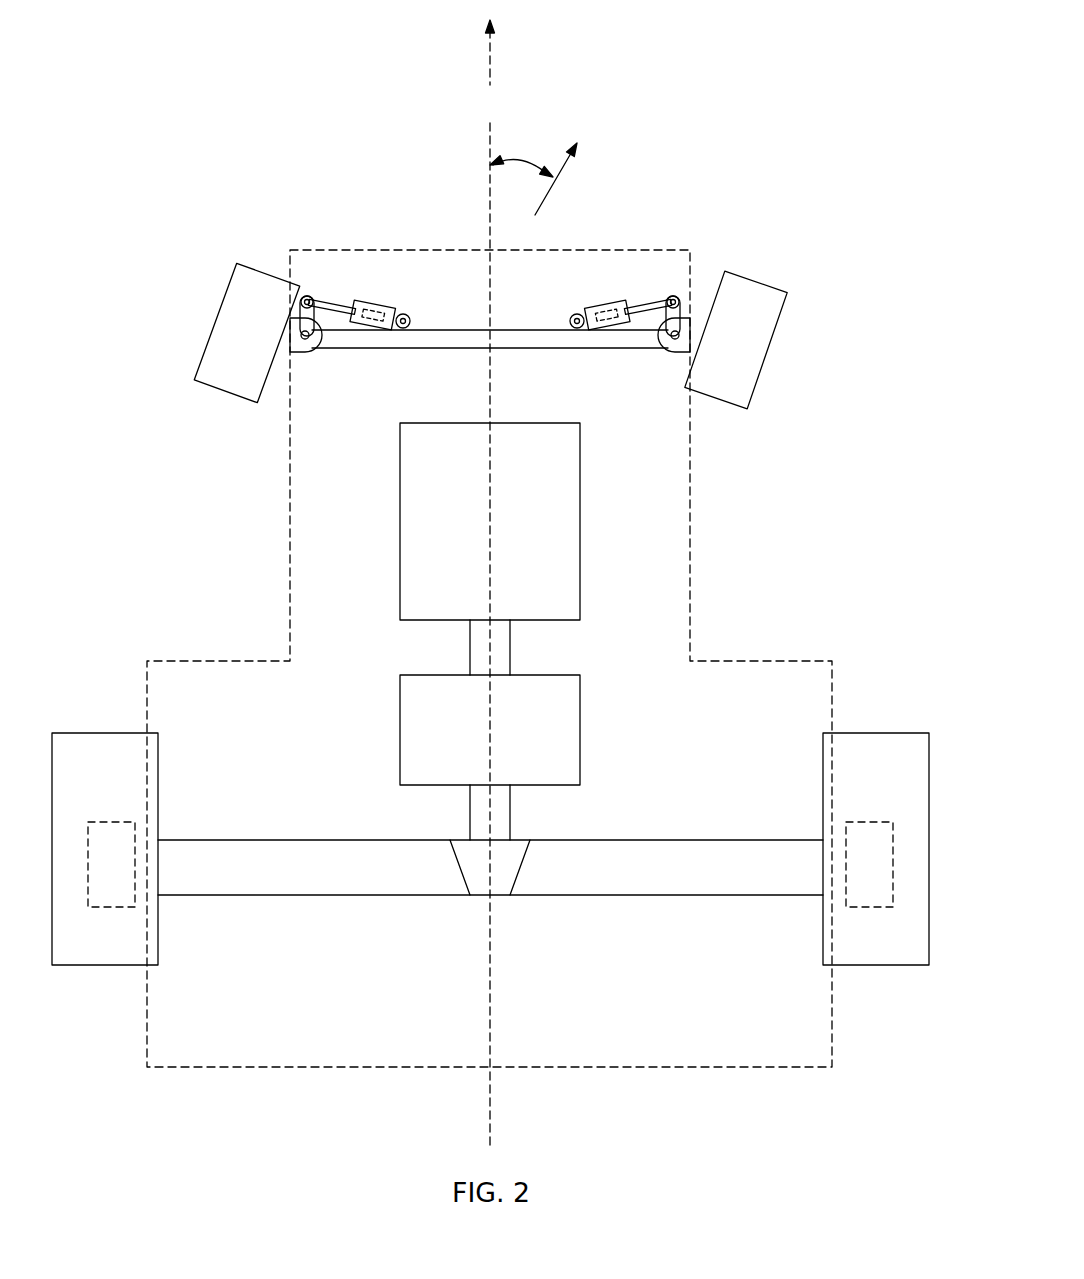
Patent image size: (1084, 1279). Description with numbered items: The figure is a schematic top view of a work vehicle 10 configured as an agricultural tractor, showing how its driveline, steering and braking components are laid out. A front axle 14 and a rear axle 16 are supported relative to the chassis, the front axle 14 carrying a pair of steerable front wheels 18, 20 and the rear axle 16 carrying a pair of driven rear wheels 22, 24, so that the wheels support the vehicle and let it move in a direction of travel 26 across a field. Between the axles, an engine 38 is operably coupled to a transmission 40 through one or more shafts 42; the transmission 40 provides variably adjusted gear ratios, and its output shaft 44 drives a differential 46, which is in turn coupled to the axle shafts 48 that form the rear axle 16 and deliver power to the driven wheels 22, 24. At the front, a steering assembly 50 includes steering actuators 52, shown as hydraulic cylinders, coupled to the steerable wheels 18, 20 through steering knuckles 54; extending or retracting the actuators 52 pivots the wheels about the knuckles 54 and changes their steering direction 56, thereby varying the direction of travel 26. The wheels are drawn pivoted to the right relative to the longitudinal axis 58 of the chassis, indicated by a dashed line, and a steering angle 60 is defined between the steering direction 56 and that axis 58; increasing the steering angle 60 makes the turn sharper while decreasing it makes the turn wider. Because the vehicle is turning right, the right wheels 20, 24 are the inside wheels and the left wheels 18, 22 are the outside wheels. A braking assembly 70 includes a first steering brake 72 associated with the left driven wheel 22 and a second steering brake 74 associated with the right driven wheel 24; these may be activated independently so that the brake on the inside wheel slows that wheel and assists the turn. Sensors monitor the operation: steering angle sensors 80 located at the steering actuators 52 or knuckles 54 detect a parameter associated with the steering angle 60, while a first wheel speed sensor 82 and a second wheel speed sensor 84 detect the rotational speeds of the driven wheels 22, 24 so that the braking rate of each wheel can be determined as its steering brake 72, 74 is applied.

The work vehicle 10 is at (763, 152).
The front axle 14 is at (553, 343).
The rear axle 16 is at (657, 834).
The steerable front wheel 18 is at (208, 316).
The steerable front wheel 20 is at (765, 362).
The driven rear wheel 22 is at (52, 745).
The driven rear wheel 24 is at (929, 772).
The direction of travel 26 is at (490, 50).
The engine 38 is at (400, 488).
The transmission 40 is at (400, 706).
The shaft 42 is at (470, 638).
The output shaft 44 is at (470, 797).
The differential 46 is at (503, 888).
The axle shaft 48 is at (348, 890).
The steering assembly 50 is at (426, 268).
The steering actuator 52 is at (378, 305).
The steering knuckle 54 is at (312, 350).
The steering direction 56 is at (565, 165).
The longitudinal axis 58 is at (490, 138).
The steering angle 60 is at (512, 163).
The braking assembly 70 is at (235, 684).
The first steering brake 72 is at (88, 900).
The second steering brake 74 is at (893, 848).
The steering angle sensor 80 is at (395, 312).
The first wheel speed sensor 82 is at (142, 848).
The second wheel speed sensor 84 is at (848, 845).